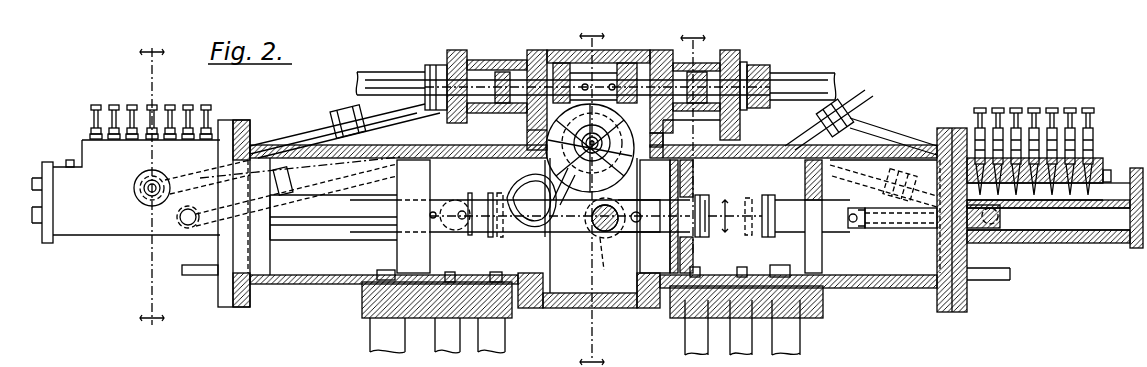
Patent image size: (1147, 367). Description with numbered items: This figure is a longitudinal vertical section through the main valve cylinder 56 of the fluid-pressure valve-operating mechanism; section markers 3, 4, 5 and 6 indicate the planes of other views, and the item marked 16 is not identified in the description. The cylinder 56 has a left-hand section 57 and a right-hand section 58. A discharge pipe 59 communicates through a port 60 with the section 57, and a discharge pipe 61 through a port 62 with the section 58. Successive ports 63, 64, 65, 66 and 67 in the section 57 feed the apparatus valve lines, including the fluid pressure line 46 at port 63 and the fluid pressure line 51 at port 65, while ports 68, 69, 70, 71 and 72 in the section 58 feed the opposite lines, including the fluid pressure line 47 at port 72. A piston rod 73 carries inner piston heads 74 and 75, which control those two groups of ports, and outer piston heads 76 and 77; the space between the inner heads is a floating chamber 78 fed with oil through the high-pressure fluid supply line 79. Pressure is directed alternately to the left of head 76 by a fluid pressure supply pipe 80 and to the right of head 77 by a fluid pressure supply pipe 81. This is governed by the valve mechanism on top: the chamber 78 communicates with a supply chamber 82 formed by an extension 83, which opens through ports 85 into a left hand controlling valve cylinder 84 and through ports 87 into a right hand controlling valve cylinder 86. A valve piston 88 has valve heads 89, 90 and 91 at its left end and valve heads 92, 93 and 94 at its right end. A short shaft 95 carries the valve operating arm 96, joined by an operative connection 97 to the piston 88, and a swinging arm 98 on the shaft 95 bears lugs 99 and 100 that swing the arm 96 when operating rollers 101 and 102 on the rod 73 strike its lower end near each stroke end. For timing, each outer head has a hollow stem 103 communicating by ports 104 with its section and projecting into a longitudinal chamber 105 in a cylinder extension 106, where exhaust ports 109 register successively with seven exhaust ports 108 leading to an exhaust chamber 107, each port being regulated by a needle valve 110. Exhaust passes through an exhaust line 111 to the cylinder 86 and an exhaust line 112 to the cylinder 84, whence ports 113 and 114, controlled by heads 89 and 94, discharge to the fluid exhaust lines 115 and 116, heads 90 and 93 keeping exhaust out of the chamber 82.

The section line 3- 3 is at (152, 186).
The section line 4- 4 is at (592, 191).
The section line 5- 5 is at (693, 136).
The section line 6- 6 is at (735, 216).
The control rod 16 is at (300, 182).
The fluid pressure line 46 is at (446, 342).
The fluid pressure line 47 is at (686, 336).
The fluid pressure line 51 is at (498, 340).
The cylinder 56 is at (628, 308).
The left-hand section 57 is at (316, 285).
The right-hand section 58 is at (886, 288).
The discharge pipe 59 is at (372, 340).
The port 60 is at (386, 270).
The discharge pipe 61 is at (796, 356).
The port 62 is at (790, 264).
The port 63 is at (450, 272).
The port 64 is at (498, 60).
The port 65 is at (496, 272).
The port 66 is at (472, 193).
The port 67 is at (540, 176).
The port 68 is at (768, 195).
The port 69 is at (748, 198).
The port 70 is at (744, 264).
The port 71 is at (706, 195).
The port 72 is at (697, 264).
The piston rod 73 is at (480, 217).
The inner piston head 74 is at (413, 216).
The inner piston head 75 is at (659, 216).
The outer piston head 76 is at (244, 213).
The outer piston head 77 is at (827, 216).
The floating chamber 78 is at (593, 225).
The high-pressure fluid supply line 79 is at (606, 258).
The fluid pressure supply pipe 80 is at (190, 226).
The fluid pressure supply pipe 81 is at (838, 105).
The supply chamber 82 is at (660, 134).
The extension 83 is at (527, 131).
The left hand controlling valve cylinder 84 is at (597, 60).
The ports 85 is at (527, 117).
The right hand controlling valve cylinder 86 is at (688, 68).
The ports 87 is at (628, 168).
The valve piston 88 is at (634, 63).
The valve head 89 is at (448, 55).
The valve head 90 is at (503, 72).
The valve head 91 is at (560, 63).
The valve head 92 is at (658, 50).
The valve head 93 is at (730, 50).
The valve head 94 is at (762, 66).
The short shaft 95 is at (602, 142).
The valve operating arm 96 is at (680, 134).
The operative connection 97 is at (593, 80).
The swinging arm 98 is at (586, 150).
The lug 99 is at (578, 140).
The lug 100 is at (596, 152).
The operating roller 101 is at (462, 220).
The operating roller 102 is at (602, 232).
The hollow stem 103 is at (932, 228).
The ports 104 is at (856, 228).
The longitudinal chamber 105 is at (1058, 240).
The cylinder extension 106 is at (116, 226).
The exhaust chamber 107 is at (1100, 190).
The exhaust ports 108 is at (1046, 206).
The exhaust ports 109 is at (1006, 230).
The needle valves 110 is at (132, 105).
The exhaust line 111 is at (882, 132).
The exhaust line 112 is at (312, 136).
The ports 113 is at (438, 66).
The ports 114 is at (746, 62).
The fluid exhaust line 115 is at (380, 74).
The fluid exhaust line 116 is at (804, 74).